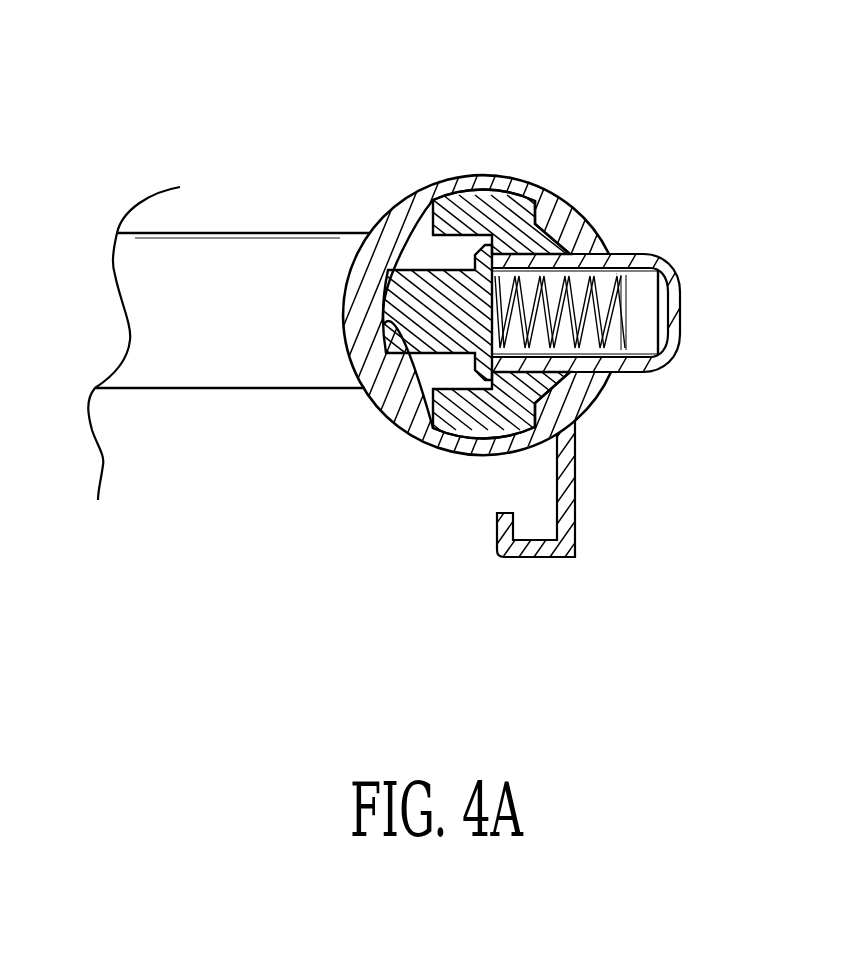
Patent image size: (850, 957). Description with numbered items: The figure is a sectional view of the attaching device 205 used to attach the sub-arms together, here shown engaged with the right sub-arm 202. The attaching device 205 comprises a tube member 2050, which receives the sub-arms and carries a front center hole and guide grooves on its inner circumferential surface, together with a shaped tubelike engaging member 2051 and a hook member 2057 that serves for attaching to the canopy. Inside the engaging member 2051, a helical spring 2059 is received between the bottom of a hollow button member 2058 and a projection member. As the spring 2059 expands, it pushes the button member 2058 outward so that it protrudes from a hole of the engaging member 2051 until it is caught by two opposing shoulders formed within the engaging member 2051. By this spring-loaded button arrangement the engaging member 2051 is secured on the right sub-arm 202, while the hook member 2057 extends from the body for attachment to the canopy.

The right sub-arm 202 is at (303, 182).
The attaching device 205 is at (505, 135).
The tube member 2050 is at (577, 421).
The shaped tubelike engaging member 2051 is at (565, 240).
The hook member 2057 is at (560, 510).
The hollow button member 2058 is at (667, 348).
The helical spring 2059 is at (643, 254).